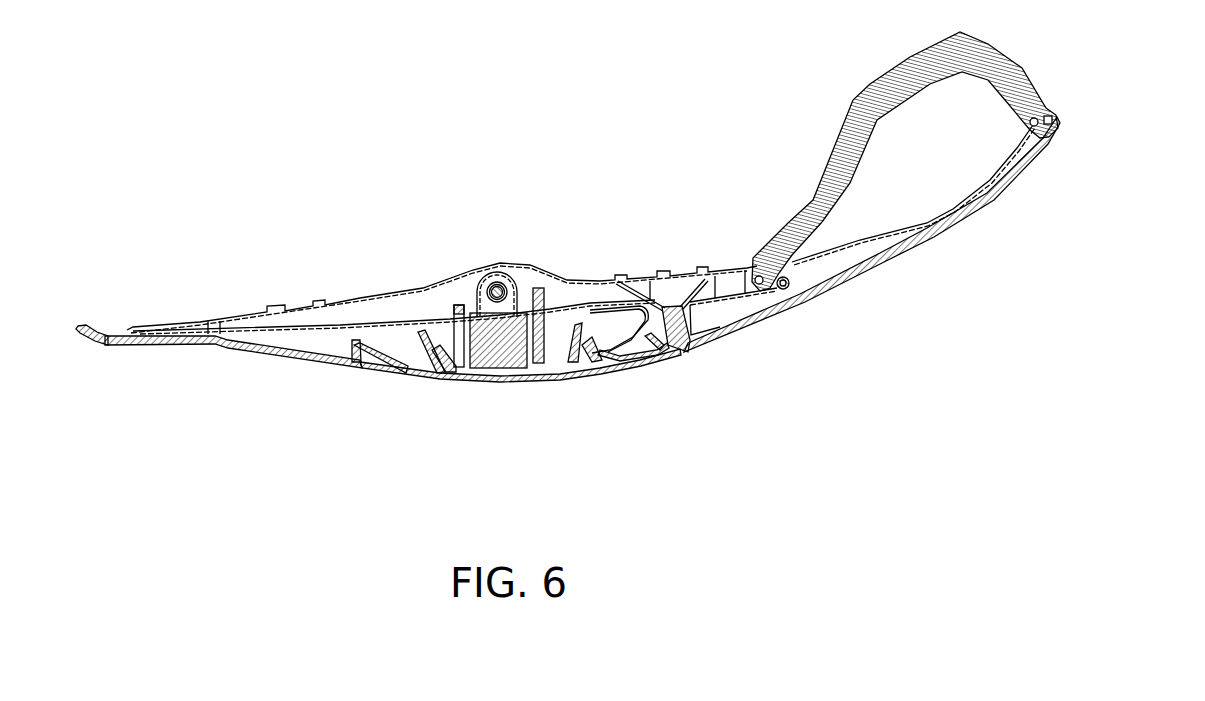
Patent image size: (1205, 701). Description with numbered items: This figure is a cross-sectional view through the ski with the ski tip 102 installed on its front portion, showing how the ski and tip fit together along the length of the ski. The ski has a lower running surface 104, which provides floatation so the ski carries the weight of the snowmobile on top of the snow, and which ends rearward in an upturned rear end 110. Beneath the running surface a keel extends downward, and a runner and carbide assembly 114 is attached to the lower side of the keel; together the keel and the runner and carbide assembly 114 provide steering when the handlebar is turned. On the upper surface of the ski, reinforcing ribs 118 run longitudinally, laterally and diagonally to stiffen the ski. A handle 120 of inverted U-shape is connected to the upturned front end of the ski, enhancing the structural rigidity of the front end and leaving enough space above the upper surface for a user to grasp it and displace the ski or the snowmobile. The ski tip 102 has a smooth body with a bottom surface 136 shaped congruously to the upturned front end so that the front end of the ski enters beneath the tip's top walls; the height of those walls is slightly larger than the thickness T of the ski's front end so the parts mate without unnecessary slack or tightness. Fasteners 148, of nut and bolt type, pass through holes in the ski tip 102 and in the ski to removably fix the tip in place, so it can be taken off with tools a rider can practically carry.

The ski tip 102 is at (1046, 151).
The lower running surface 104 is at (160, 342).
The upturned rear end 110 is at (92, 337).
The runner and carbide assembly 114 is at (520, 370).
The reinforcing ribs 118 is at (458, 297).
The handle 120 is at (883, 83).
The bottom surface 136 is at (987, 195).
The fasteners 148 is at (789, 287).
The thickness T is at (902, 195).